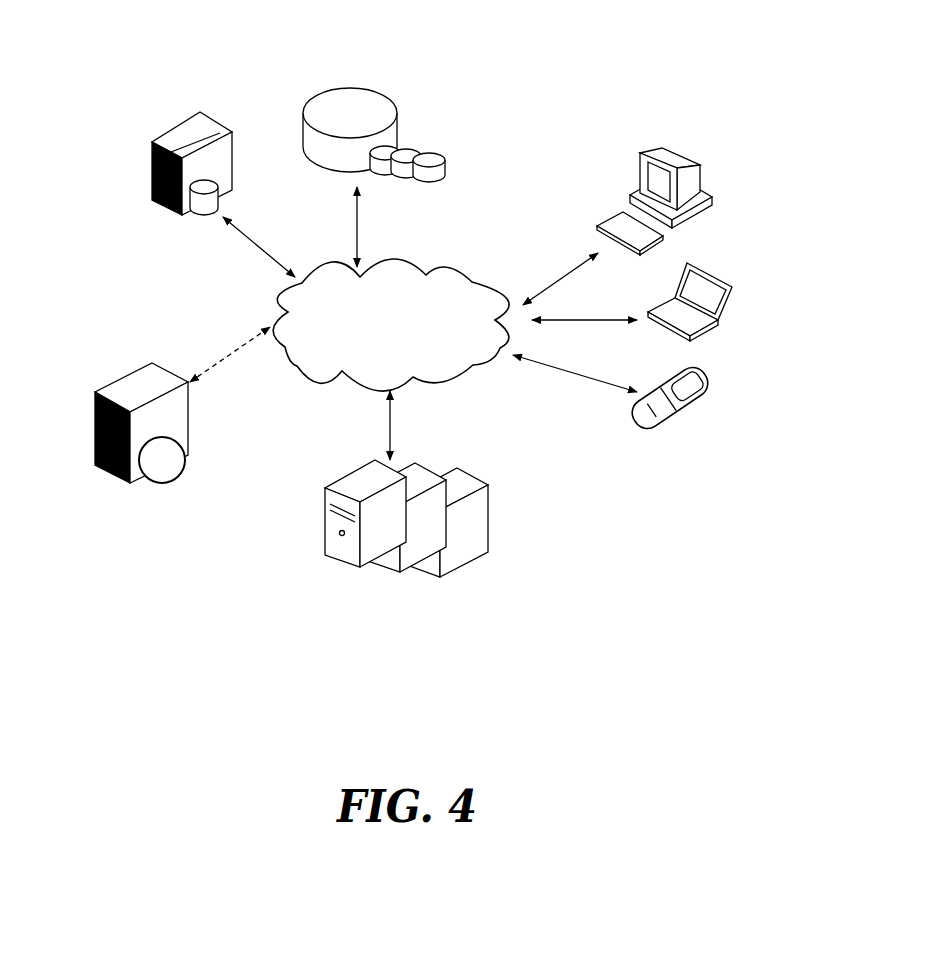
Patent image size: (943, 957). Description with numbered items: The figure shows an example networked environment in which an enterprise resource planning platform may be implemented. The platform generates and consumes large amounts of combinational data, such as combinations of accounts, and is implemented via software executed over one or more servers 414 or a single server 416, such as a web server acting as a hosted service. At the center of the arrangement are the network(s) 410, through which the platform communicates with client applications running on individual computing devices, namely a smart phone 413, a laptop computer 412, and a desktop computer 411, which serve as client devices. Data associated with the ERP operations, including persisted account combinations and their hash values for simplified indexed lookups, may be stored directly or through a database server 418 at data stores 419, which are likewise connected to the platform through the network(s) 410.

The network(s) 410 is at (396, 251).
The desktop computer 411 is at (699, 140).
The laptop computer 412 is at (734, 262).
The smart phone 413 is at (704, 373).
The servers 414 is at (352, 463).
The single server 416 is at (117, 371).
The database server 418 is at (192, 222).
The data stores 419 is at (367, 68).